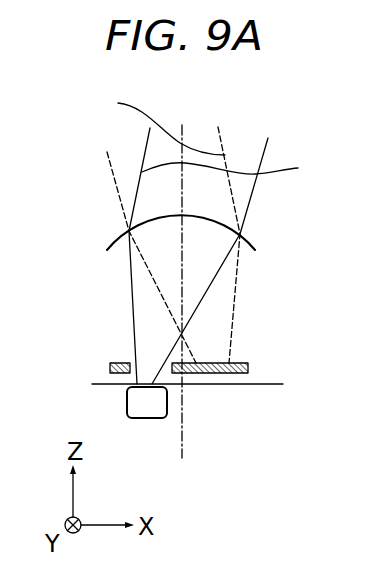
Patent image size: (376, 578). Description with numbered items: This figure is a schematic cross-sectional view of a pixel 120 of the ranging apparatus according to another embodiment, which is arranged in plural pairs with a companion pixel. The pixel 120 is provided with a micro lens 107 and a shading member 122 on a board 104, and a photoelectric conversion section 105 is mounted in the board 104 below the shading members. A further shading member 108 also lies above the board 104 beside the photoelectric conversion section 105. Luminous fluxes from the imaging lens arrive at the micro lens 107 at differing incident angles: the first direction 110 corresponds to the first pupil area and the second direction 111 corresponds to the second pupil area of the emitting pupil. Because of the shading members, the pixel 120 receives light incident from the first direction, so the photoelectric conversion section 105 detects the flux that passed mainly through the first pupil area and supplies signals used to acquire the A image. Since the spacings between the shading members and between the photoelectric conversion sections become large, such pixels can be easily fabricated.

The board 104 is at (98, 395).
The photoelectric conversion section 105 is at (143, 418).
The micro lens 107 is at (244, 237).
The shading member 108 is at (170, 375).
The first direction 110 is at (252, 199).
The second direction 111 is at (107, 152).
The pixel 120 is at (286, 138).
The shading member 122 is at (213, 363).